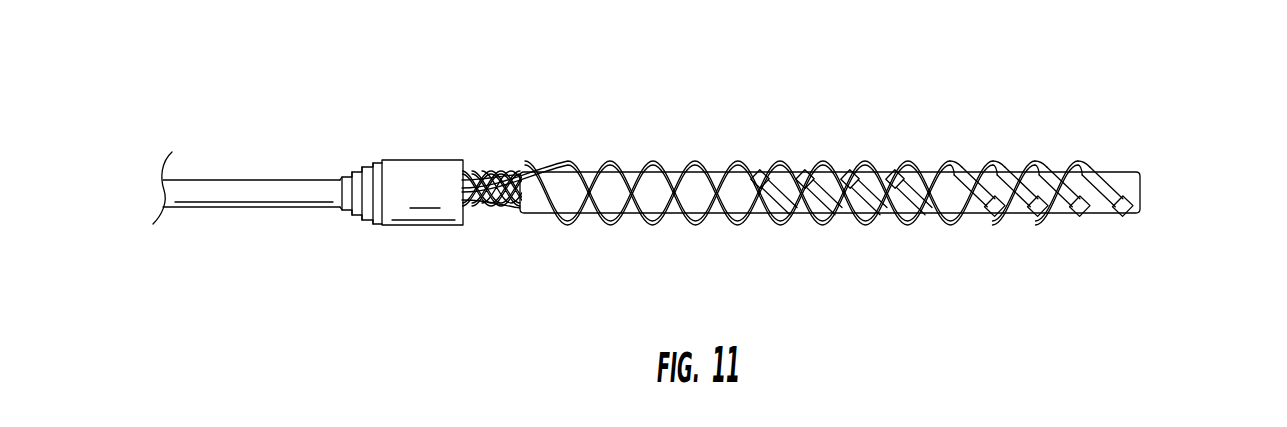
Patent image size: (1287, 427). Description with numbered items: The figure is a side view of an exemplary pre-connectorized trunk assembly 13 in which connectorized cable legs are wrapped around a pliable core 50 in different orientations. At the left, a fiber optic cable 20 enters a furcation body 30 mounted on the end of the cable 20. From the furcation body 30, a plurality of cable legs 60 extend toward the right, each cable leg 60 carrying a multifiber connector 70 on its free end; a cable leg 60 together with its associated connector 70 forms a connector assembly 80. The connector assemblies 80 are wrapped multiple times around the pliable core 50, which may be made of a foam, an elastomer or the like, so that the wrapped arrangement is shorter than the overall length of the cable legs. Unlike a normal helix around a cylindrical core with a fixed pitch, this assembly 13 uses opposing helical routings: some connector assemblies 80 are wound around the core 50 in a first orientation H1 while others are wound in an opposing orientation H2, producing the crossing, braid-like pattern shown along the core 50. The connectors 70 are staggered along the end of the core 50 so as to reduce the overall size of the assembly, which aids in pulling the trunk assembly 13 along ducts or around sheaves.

The pre-connectorized trunk assembly 13 is at (860, 168).
The fiber optic cable 20 is at (255, 193).
The furcation body 30 is at (422, 197).
The pliable core 50 is at (570, 200).
The cable leg 60 is at (1077, 165).
The multifiber connector 70 is at (1076, 181).
The connector assembly 80 is at (860, 199).
The first helical orientation H1 is at (712, 140).
The second helical orientation H2 is at (713, 247).